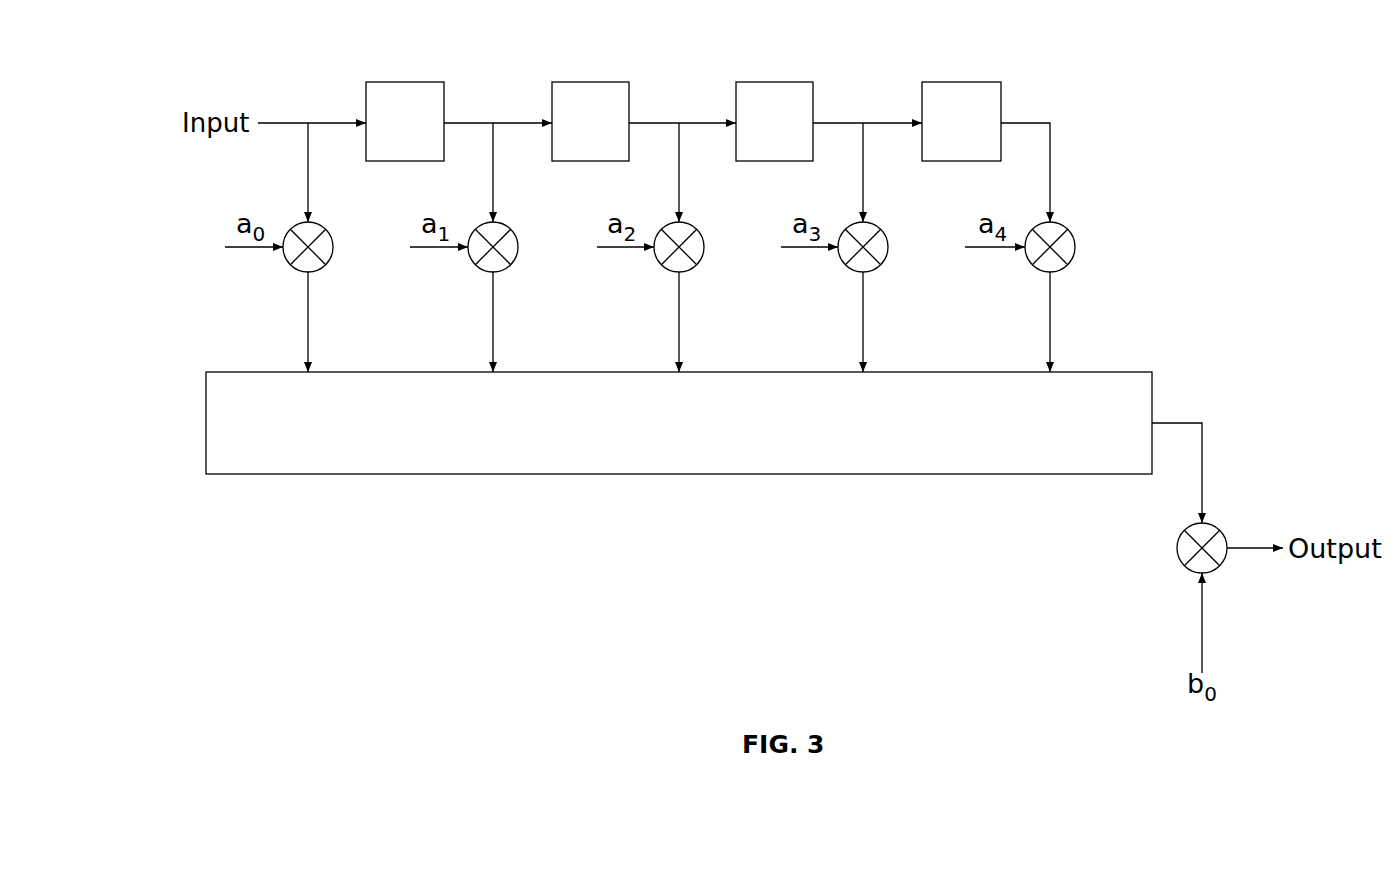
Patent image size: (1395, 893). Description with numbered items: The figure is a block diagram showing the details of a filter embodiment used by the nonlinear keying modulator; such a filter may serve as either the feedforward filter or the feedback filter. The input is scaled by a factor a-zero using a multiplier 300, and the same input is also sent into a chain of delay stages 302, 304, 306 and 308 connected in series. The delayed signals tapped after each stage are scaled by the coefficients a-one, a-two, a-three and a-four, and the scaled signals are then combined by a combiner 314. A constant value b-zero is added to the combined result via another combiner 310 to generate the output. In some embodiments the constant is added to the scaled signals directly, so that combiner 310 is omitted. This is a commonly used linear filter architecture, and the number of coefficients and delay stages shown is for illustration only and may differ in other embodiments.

The multiplier 300 is at (333, 247).
The delay stage 302 is at (404, 82).
The delay stage 304 is at (590, 82).
The delay stage 306 is at (775, 82).
The delay stage 308 is at (961, 82).
The combiner 310 is at (1177, 548).
The combiner 314 is at (678, 474).